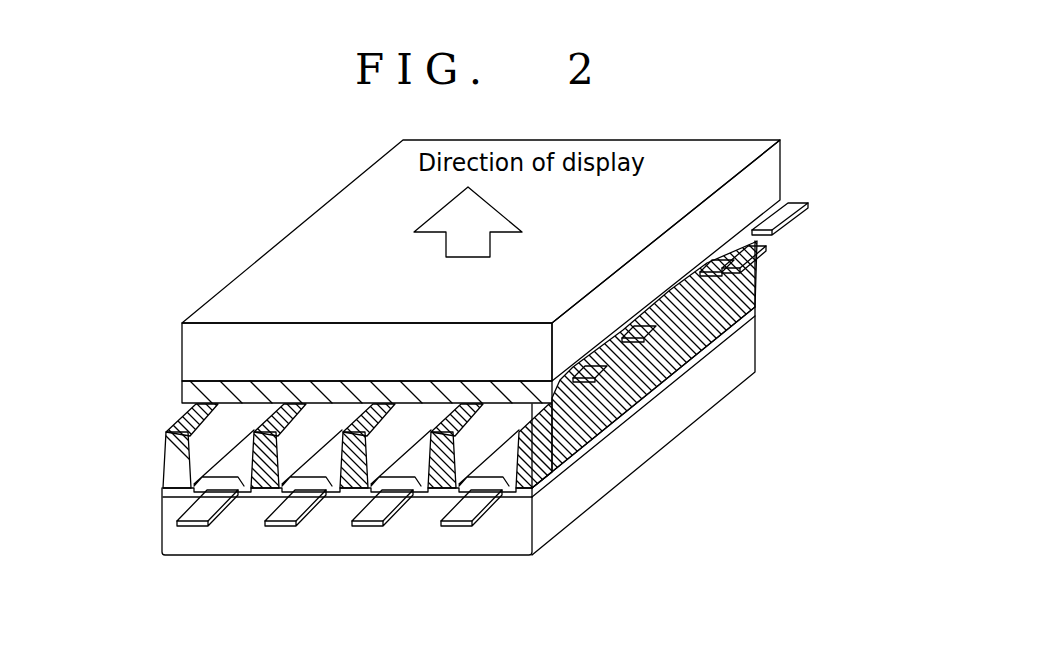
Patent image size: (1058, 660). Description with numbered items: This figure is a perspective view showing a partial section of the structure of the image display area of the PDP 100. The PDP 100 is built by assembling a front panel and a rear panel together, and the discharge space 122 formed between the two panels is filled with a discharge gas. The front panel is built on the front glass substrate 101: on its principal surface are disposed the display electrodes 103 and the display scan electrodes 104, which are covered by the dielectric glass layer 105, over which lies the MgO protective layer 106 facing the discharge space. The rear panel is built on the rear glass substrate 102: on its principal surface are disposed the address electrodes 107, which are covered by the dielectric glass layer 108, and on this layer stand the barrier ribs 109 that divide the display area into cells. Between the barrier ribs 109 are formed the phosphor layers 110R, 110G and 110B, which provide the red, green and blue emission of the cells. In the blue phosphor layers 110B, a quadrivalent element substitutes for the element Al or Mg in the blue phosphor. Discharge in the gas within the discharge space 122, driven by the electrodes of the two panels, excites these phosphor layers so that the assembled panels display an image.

The PDP 100 is at (765, 345).
The front glass substrate 101 is at (188, 342).
The rear glass substrate 102 is at (422, 547).
The display electrodes 103 is at (722, 258).
The display scan electrodes 104 is at (757, 266).
The dielectric glass layer 105 is at (183, 390).
The MgO protective layer 106 is at (180, 405).
The address electrodes 107 is at (202, 512).
The dielectric glass layer 108 is at (170, 490).
The barrier ribs 109 is at (337, 440).
The phosphor layer 110R is at (207, 477).
The phosphor layer 110G is at (307, 477).
The phosphor layer 110B is at (392, 476).
The discharge space 122 is at (502, 423).